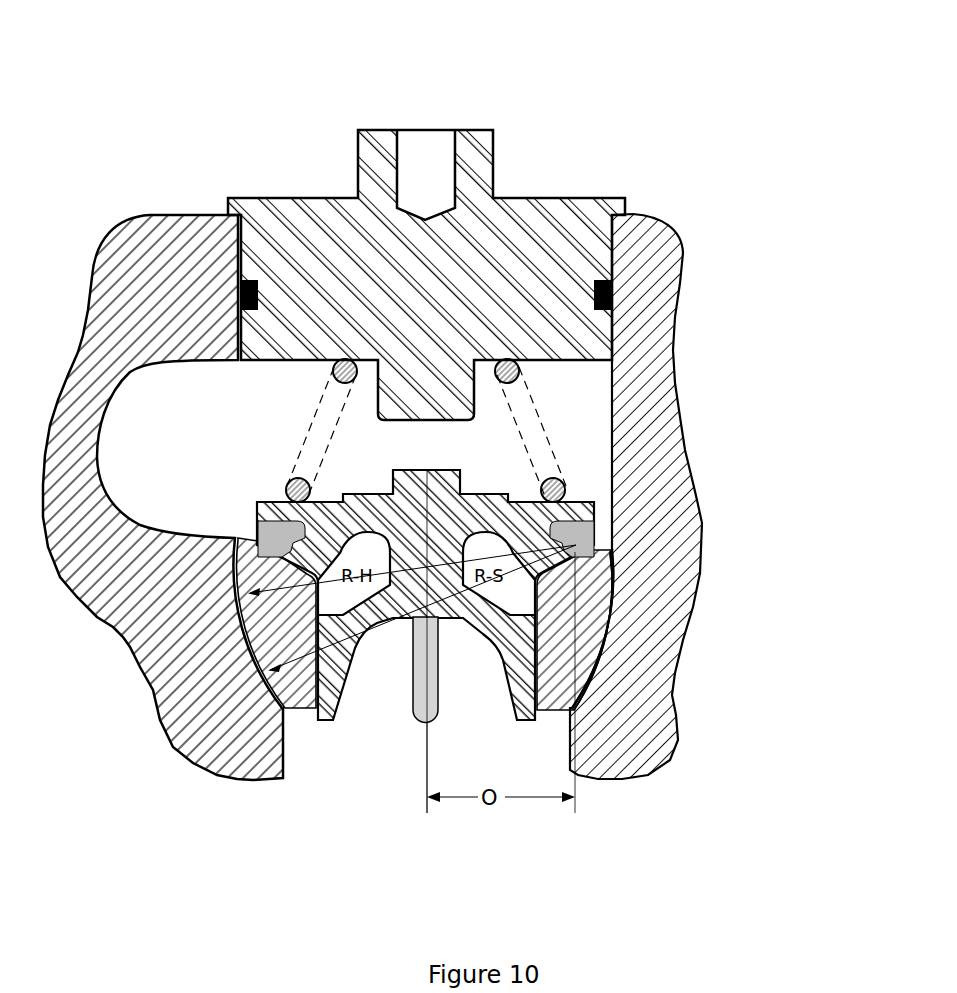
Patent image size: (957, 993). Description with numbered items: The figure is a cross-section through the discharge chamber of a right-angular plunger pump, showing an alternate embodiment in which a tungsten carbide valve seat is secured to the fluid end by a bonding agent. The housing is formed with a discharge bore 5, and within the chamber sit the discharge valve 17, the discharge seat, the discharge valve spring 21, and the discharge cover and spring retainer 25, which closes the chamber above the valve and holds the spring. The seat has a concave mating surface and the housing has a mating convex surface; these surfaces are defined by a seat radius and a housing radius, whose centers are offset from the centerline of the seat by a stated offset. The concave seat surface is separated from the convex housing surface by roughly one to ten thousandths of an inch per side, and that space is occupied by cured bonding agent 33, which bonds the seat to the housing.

The discharge bore 5 is at (370, 794).
The discharge valve 17 is at (572, 490).
The discharge valve spring 21 is at (540, 427).
The discharge cover and spring retainer 25 is at (318, 198).
The cured bonding agent 33 is at (610, 608).